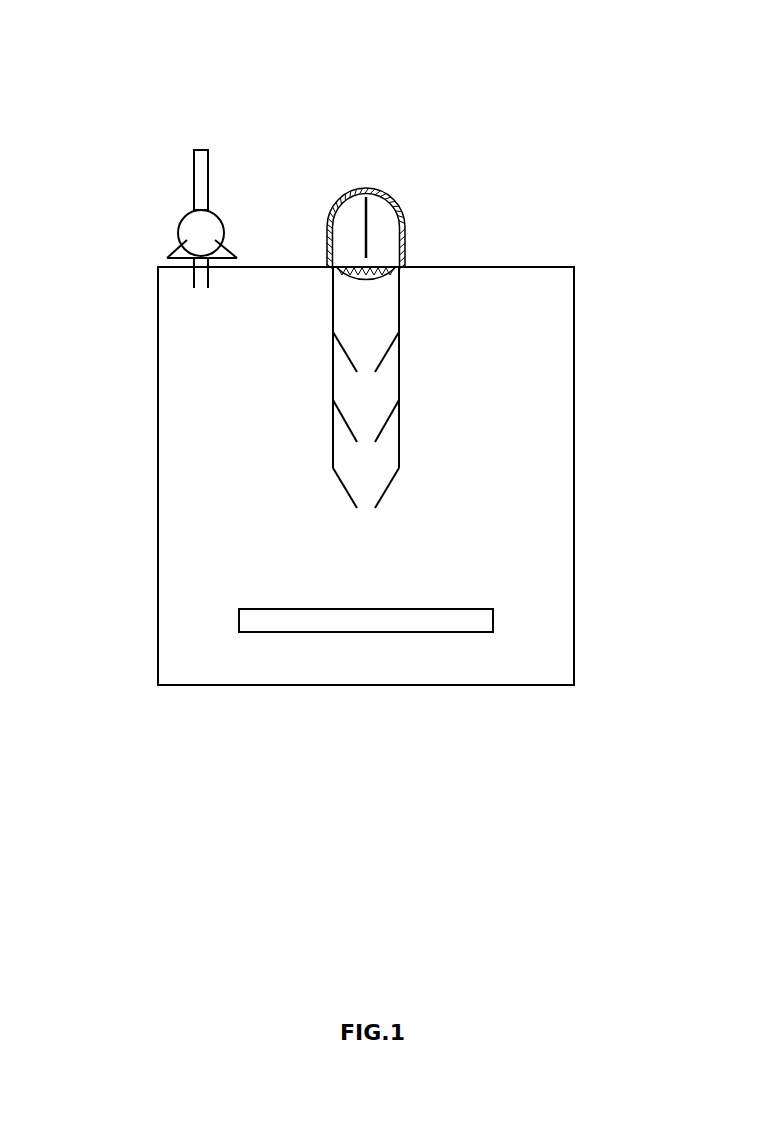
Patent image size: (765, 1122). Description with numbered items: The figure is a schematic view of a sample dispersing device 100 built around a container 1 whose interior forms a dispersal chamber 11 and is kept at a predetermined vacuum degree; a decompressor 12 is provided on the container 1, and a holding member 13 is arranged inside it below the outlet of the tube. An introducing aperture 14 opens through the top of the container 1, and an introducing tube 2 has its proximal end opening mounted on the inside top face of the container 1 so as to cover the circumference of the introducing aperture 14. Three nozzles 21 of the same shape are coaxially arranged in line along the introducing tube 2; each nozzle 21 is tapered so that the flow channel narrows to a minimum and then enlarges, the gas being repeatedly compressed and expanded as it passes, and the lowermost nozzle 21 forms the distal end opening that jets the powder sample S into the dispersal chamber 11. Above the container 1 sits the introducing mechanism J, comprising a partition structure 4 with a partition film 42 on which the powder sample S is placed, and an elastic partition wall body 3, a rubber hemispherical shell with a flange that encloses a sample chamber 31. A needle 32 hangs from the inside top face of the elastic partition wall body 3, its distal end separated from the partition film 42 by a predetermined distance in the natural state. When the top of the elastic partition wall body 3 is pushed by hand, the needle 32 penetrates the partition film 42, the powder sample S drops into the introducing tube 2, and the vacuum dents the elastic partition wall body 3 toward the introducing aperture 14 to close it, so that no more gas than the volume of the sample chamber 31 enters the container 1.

The sample dispersing device 100 is at (506, 106).
The container 1 is at (532, 246).
The dispersal chamber 11 is at (235, 512).
The decompressor 12 is at (178, 220).
The holding member 13 is at (366, 633).
The introducing aperture 14 is at (366, 292).
The introducing tube 2 is at (422, 367).
The nozzle 21 is at (343, 350).
The elastic partition wall body 3 is at (386, 190).
The sample chamber 31 is at (351, 245).
The needle 32 is at (368, 218).
The partition structure 4 is at (418, 286).
The partition film 42 is at (350, 276).
The powder sample S is at (394, 256).
The introducing mechanism J is at (448, 180).